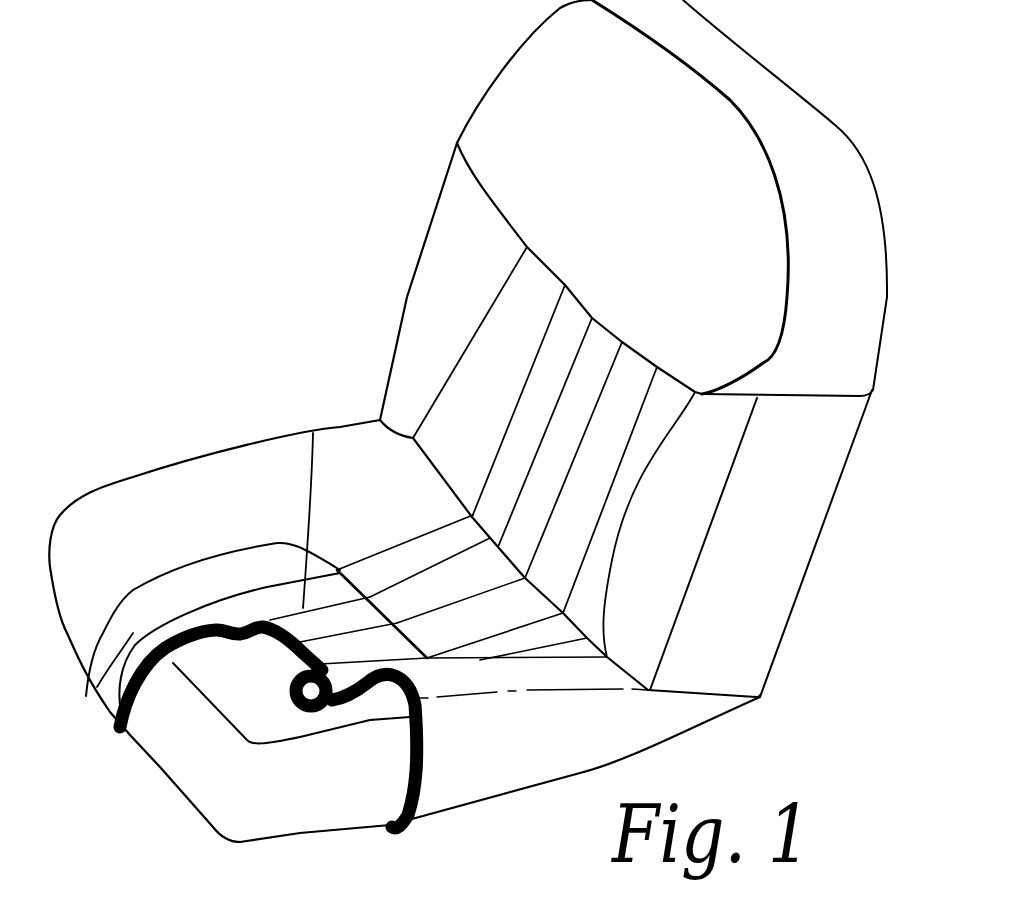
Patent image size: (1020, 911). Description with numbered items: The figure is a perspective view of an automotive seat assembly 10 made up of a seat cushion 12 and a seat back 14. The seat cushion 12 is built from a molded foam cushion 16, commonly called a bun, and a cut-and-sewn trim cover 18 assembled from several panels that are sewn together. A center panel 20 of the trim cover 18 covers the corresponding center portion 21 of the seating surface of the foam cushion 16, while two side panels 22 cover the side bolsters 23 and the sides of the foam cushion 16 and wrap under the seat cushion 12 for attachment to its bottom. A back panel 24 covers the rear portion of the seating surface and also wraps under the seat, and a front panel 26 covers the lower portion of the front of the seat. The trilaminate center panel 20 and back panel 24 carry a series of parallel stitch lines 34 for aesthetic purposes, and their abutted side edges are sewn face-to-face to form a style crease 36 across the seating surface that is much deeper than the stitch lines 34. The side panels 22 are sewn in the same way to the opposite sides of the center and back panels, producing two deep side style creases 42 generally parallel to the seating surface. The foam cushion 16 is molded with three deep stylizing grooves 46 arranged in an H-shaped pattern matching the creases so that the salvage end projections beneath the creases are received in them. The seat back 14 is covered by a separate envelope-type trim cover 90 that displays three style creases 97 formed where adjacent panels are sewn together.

The automotive seat assembly 10 is at (478, 78).
The seat cushion 12 is at (275, 430).
The seat back 14 is at (415, 238).
The foam cushion 16 is at (338, 817).
The trim cover 18 is at (690, 713).
The center panel 20 is at (103, 678).
The center portion 21 is at (217, 697).
The side panels 22 is at (117, 503).
The side bolsters 23 is at (377, 710).
The back panel 24 is at (398, 547).
The front panel 26 is at (118, 720).
The stitch lines 34 is at (322, 640).
The style crease 36 is at (411, 578).
The side style creases 42 is at (213, 564).
The stylizing grooves 46 is at (297, 735).
The trim cover 90 is at (797, 547).
The style creases 97 is at (555, 272).